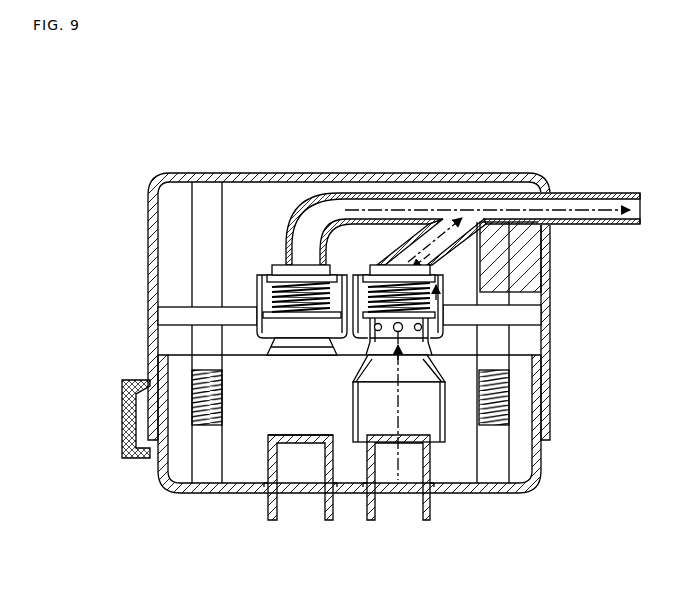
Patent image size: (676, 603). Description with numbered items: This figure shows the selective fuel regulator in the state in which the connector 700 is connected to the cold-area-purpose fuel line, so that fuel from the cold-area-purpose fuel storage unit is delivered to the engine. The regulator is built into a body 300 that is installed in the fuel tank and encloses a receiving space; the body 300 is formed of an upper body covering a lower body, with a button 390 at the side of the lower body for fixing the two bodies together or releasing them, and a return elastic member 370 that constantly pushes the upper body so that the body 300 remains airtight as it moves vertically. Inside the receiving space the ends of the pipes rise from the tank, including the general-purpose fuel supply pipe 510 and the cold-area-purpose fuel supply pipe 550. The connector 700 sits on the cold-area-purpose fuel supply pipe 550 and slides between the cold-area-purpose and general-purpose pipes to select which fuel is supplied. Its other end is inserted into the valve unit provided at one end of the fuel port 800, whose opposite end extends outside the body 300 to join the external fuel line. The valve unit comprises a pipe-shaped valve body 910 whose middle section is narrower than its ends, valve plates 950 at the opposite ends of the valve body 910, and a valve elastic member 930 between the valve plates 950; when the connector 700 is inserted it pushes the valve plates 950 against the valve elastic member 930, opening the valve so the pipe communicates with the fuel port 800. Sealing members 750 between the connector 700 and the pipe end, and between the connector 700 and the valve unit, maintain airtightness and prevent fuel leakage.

The body 300 is at (240, 158).
The return elastic member 370 is at (509, 407).
The button 390 is at (118, 405).
The general-purpose fuel supply pipe 510 is at (305, 510).
The cold-area-purpose fuel supply pipe 550 is at (402, 510).
The connector 700 is at (440, 368).
The sealing member 750 is at (440, 345).
The fuel port 800 is at (598, 188).
The valve body 910 is at (445, 298).
The valve elastic member 930 is at (257, 284).
The valve plate 950 is at (262, 335).